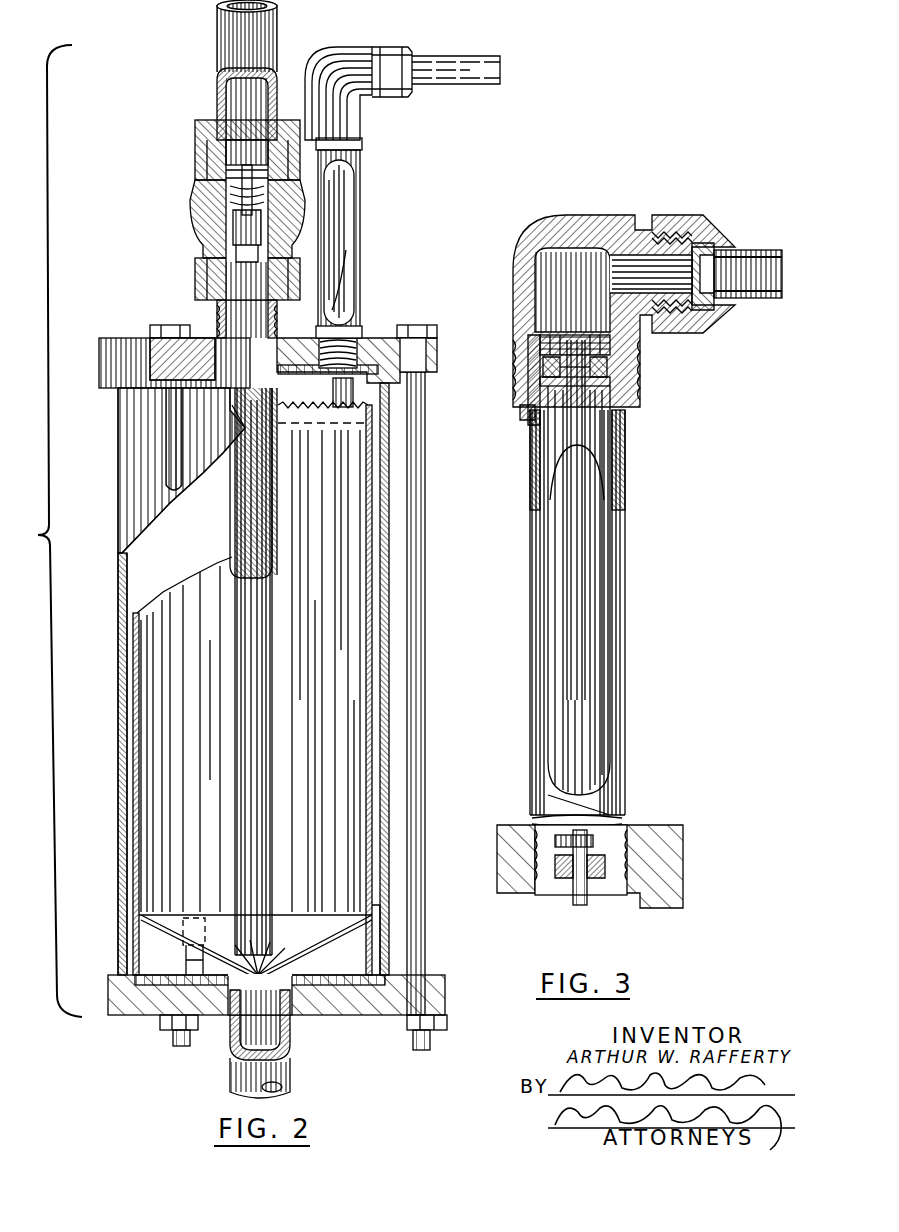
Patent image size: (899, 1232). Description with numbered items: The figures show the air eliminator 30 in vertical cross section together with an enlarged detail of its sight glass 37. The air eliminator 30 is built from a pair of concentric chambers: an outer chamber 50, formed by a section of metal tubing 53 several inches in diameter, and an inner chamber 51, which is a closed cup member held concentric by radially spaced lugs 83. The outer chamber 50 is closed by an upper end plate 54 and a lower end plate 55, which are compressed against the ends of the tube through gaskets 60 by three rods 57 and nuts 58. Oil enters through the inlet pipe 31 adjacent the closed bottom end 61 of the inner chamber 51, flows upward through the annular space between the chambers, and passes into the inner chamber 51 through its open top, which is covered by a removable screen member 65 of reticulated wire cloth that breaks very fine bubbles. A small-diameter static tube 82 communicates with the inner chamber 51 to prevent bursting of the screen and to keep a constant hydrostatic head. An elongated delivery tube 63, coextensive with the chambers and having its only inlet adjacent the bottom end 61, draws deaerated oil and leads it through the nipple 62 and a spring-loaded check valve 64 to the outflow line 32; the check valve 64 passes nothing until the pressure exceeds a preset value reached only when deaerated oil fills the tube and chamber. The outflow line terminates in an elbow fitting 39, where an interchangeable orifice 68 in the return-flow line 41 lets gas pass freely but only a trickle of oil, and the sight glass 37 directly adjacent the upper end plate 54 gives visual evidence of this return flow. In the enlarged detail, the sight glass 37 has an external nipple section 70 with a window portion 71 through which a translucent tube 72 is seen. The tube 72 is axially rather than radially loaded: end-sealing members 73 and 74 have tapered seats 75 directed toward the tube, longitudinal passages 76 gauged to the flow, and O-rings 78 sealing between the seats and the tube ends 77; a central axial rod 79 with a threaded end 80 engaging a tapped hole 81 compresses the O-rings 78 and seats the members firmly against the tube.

In FIG. 2, the air eliminator 30 is at (48, 531).
In FIG. 2, the inlet pipe 31 is at (292, 1058).
In FIG. 2, the outflow line 32 is at (217, 35).
In FIG. 2, the sight glass 37 is at (360, 233).
In FIG. 3, the sight glass 37 is at (625, 608).
In FIG. 2, the elbow fitting 39 is at (335, 47).
In FIG. 3, the elbow fitting 39 is at (550, 230).
In FIG. 2, the return-flow line 41 is at (480, 56).
In FIG. 3, the return-flow line 41 is at (750, 256).
In FIG. 2, the outer chamber 50 is at (127, 712).
In FIG. 2, the inner chamber 51 is at (158, 683).
In FIG. 2, the metal tubing section 53 is at (122, 780).
In FIG. 2, the upper end plate 54 is at (122, 338).
In FIG. 3, the upper end plate 54 is at (680, 810).
In FIG. 2, the lower end plate 55 is at (122, 1020).
In FIG. 2, the rods 57 is at (165, 450).
In FIG. 2, the nuts 58 is at (170, 1036).
In FIG. 2, the gaskets 60 is at (366, 350).
In FIG. 2, the bottom end 61 is at (322, 948).
In FIG. 2, the nipple 62 is at (217, 320).
In FIG. 2, the delivery tube 63 is at (283, 863).
In FIG. 2, the spring-loaded check valve 64 is at (198, 200).
In FIG. 2, the screen member 65 is at (300, 405).
In FIG. 3, the orifice 68 is at (706, 275).
In FIG. 2, the nipple section 70 is at (360, 168).
In FIG. 3, the nipple section 70 is at (625, 496).
In FIG. 3, the window portion 71 is at (600, 743).
In FIG. 2, the sight glass tube 72 is at (350, 203).
In FIG. 3, the sight glass tube 72 is at (535, 445).
In FIG. 3, the end-sealing member 73 is at (618, 356).
In FIG. 3, the end-sealing member 74 is at (572, 880).
In FIG. 3, the tapered seat 75 is at (618, 378).
In FIG. 3, the longitudinal passages 76 is at (518, 307).
In FIG. 3, the tube ends 77 is at (618, 400).
In FIG. 3, the O-rings 78 is at (520, 380).
In FIG. 2, the central axial rod 79 is at (348, 270).
In FIG. 3, the central axial rod 79 is at (590, 402).
In FIG. 3, the threaded end 80 is at (580, 905).
In FIG. 3, the tapped hole 81 is at (590, 880).
In FIG. 2, the static tube 82 is at (333, 385).
In FIG. 2, the lugs 83 is at (365, 955).